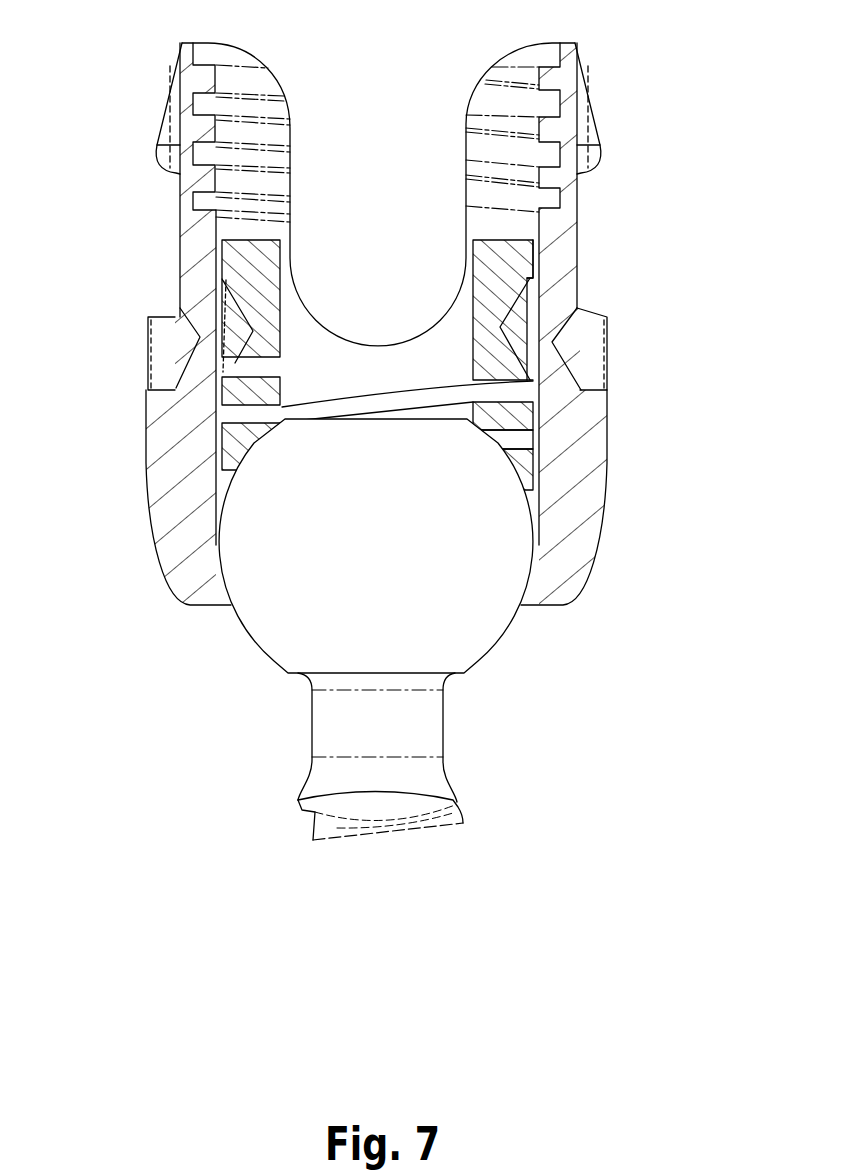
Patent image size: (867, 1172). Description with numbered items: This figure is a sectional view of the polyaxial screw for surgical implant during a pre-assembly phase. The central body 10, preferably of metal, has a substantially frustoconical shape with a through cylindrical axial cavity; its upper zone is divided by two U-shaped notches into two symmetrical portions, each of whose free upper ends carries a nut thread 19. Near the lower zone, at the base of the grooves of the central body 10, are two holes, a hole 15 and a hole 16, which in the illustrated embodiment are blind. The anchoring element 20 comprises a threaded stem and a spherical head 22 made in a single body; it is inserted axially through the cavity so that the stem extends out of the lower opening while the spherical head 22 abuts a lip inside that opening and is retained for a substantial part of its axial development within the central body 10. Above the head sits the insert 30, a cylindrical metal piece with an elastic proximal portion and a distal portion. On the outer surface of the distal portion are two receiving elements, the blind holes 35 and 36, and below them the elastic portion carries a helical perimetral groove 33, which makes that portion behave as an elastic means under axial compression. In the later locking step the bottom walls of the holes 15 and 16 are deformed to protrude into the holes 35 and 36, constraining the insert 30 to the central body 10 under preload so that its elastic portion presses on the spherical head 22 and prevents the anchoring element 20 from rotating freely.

The central body 10 is at (388, 335).
The hole 15 is at (597, 363).
The hole 16 is at (163, 355).
The nut thread 19 is at (518, 75).
The anchoring element 20 is at (515, 770).
The spherical head 22 is at (463, 635).
The insert 30 is at (388, 341).
The perimetral groove 33 is at (517, 437).
The blind hole 35 is at (517, 325).
The blind hole 36 is at (242, 328).